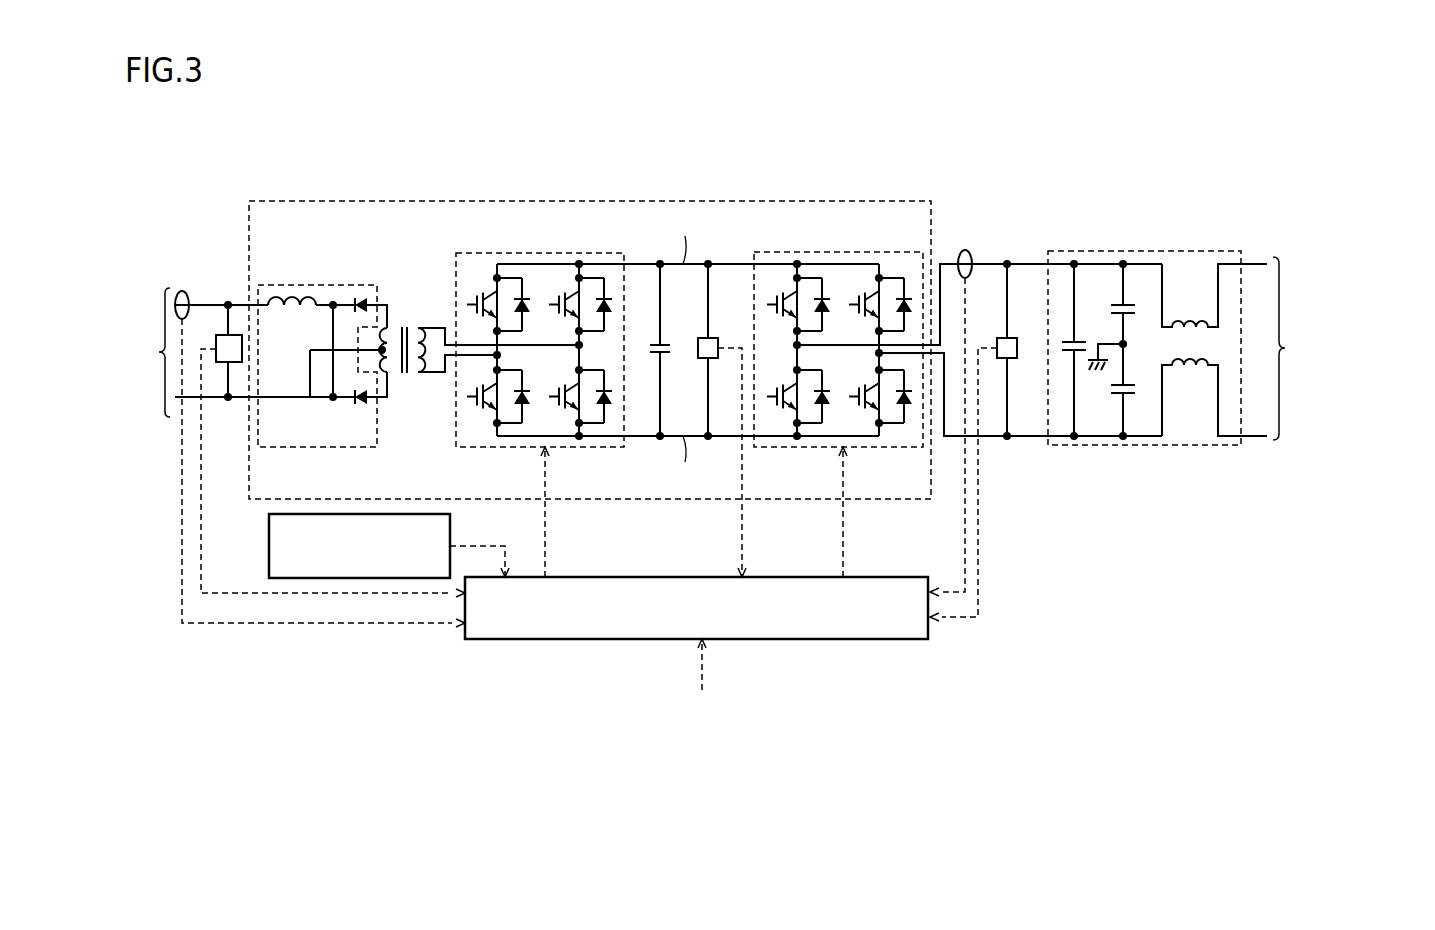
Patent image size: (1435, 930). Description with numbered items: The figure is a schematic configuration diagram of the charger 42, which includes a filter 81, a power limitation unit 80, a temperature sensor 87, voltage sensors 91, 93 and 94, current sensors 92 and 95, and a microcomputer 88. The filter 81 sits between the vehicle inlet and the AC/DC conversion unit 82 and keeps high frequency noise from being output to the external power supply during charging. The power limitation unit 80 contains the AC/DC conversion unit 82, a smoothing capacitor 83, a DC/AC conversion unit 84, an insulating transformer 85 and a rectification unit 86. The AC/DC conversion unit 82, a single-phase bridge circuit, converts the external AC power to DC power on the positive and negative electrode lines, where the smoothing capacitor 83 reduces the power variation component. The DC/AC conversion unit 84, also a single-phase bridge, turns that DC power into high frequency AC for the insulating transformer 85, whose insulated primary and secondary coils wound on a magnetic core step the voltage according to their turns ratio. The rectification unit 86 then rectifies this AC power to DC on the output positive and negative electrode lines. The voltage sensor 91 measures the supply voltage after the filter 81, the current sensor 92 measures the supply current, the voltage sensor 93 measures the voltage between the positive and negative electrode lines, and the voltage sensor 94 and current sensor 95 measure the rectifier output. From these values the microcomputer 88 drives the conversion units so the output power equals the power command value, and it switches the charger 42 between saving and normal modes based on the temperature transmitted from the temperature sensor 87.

The charger 42 is at (279, 160).
The power limitation unit 80 is at (875, 201).
The filter 81 is at (1168, 251).
The AC/DC conversion unit 82 is at (860, 252).
The smoothing capacitor 83 is at (655, 342).
The DC/AC conversion unit 84 is at (565, 253).
The insulating transformer 85 is at (413, 281).
The rectification unit 86 is at (340, 285).
The temperature sensor 87 is at (269, 547).
The microcomputer 88 is at (870, 577).
The voltage sensor 91 is at (1012, 338).
The current sensor 92 is at (965, 250).
The voltage sensor 93 is at (698, 340).
The voltage sensor 94 is at (236, 335).
The current sensor 95 is at (181, 291).